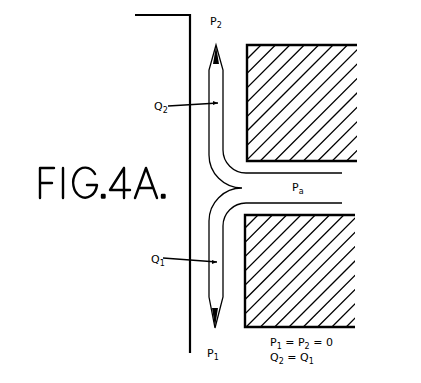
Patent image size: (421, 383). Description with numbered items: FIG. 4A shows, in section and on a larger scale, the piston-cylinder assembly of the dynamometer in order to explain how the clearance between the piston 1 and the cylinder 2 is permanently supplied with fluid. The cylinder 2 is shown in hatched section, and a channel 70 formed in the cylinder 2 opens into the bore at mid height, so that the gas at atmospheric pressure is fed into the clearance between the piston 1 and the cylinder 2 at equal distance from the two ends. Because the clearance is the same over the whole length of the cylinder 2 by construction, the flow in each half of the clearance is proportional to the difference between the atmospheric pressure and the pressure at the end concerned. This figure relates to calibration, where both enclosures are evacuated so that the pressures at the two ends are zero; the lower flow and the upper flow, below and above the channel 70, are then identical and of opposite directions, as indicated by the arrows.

The piston 1 is at (133, 220).
The cylinder 2 is at (325, 143).
The channel 70 is at (134, 145).